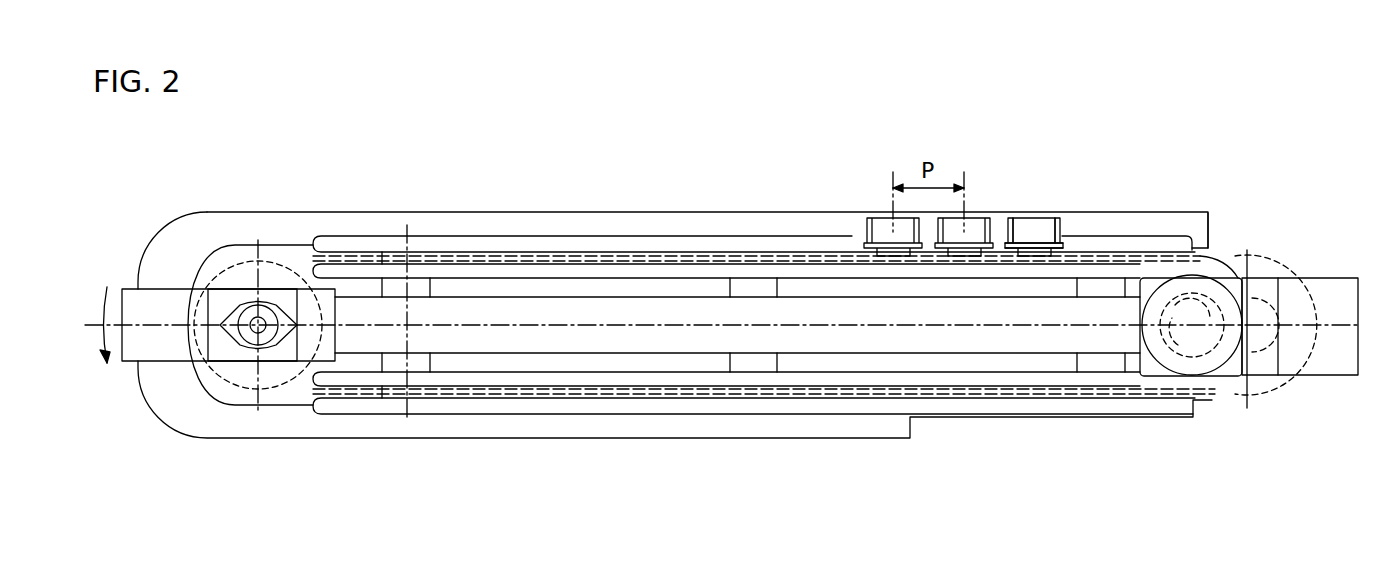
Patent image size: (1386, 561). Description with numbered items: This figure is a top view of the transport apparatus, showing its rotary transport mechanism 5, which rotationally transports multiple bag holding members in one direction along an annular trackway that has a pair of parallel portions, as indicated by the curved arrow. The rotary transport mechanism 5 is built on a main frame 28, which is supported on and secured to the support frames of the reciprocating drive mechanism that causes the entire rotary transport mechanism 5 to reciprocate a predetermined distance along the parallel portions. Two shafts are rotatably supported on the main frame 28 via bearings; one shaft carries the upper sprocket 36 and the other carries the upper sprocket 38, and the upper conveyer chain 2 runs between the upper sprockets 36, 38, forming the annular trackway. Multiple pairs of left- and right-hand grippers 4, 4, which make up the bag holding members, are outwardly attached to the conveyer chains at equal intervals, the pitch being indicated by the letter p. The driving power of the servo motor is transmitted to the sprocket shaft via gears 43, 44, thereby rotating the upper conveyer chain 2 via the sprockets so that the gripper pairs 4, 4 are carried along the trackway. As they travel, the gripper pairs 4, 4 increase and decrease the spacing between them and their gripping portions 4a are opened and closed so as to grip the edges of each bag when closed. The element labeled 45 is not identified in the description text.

The upper conveyer chain 2 is at (1203, 275).
The gripper 4 is at (1008, 230).
The gripping portion 4a is at (1012, 222).
The rotary transport mechanism 5 is at (1192, 146).
The main frame 28 is at (500, 218).
The upper sprocket 36 is at (1263, 263).
The upper sprocket 38 is at (267, 248).
The gear 43 is at (1183, 353).
The gear 44 is at (1256, 355).
The clip 45 is at (1035, 218).